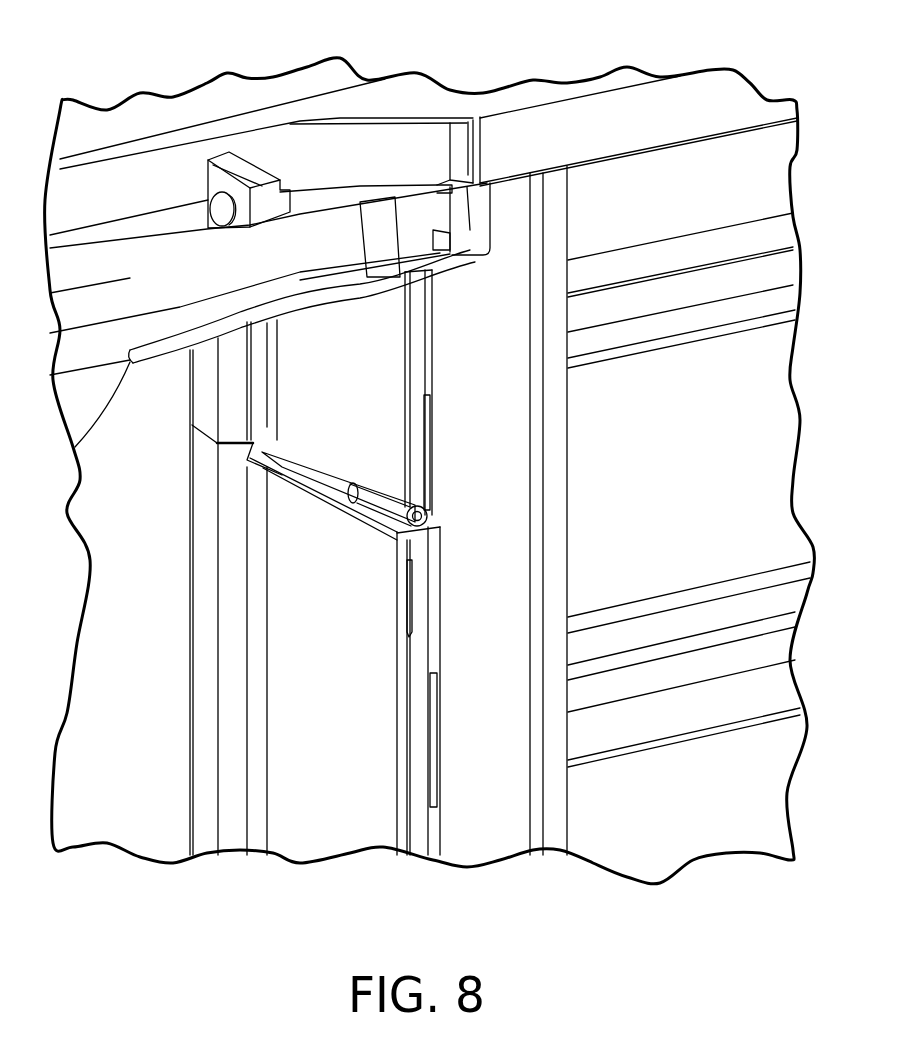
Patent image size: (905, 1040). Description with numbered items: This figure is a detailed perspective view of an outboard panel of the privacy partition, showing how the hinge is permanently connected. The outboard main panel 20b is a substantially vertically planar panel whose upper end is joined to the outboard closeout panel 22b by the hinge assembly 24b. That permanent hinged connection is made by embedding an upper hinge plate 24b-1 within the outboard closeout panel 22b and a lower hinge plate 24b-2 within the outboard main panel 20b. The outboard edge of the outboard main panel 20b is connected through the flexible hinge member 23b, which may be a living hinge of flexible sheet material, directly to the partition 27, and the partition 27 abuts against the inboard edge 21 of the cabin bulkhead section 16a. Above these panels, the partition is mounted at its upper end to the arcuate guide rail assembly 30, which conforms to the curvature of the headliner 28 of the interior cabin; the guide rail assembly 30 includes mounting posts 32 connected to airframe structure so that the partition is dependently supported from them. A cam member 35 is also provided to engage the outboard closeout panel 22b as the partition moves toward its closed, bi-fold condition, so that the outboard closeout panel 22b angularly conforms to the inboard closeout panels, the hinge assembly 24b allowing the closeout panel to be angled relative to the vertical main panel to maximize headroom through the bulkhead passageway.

The cabin bulkhead section 16a is at (149, 635).
The headliner 28 is at (522, 98).
The mounting post 32 is at (238, 160).
The guide rail assembly 30 is at (430, 213).
The cam member 35 is at (285, 305).
The partition 27 is at (217, 503).
The flexible hinge member 23b is at (258, 535).
The outboard closeout panel 22b is at (371, 412).
The hinge assembly 24b is at (425, 517).
The upper hinge plate 24b-1 is at (430, 432).
The lower hinge plate 24b-2 is at (418, 587).
The outboard main panel 20b is at (351, 713).
The inboard edge 21 is at (493, 384).